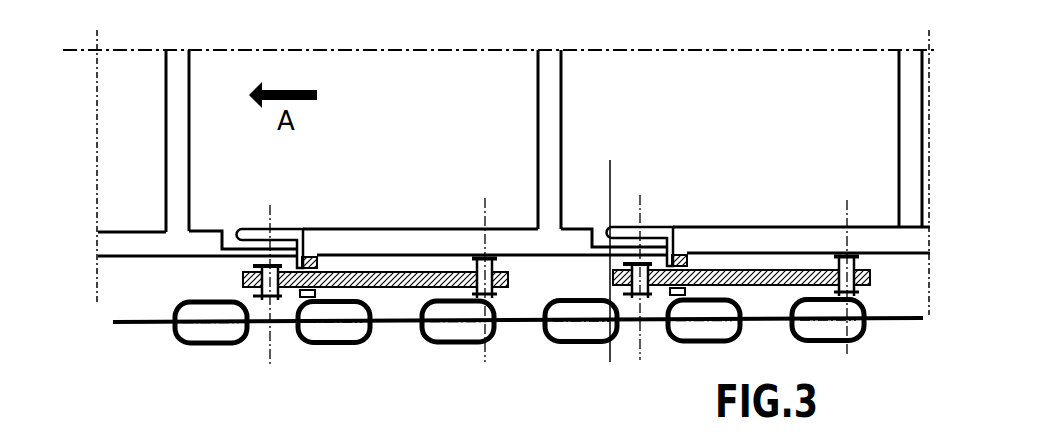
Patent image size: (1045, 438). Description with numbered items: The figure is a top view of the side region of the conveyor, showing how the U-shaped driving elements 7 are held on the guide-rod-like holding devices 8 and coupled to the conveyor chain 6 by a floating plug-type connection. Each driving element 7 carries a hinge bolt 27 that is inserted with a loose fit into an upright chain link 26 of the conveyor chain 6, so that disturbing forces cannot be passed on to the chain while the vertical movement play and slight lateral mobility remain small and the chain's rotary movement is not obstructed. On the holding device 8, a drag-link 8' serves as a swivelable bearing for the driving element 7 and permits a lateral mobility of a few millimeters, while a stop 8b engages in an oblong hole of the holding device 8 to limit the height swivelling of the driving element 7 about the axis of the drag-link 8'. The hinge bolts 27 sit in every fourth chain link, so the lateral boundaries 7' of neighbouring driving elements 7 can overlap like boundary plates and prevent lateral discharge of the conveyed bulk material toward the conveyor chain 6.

The conveyor chain 6 is at (157, 330).
The driving element 7 is at (544, 141).
The lateral boundary 7' is at (514, 221).
The holding device 8 is at (375, 331).
The drag-link 8' is at (499, 323).
The stop 8b is at (332, 250).
The upright chain link 26 is at (256, 330).
The hinge bolt 27 is at (283, 330).